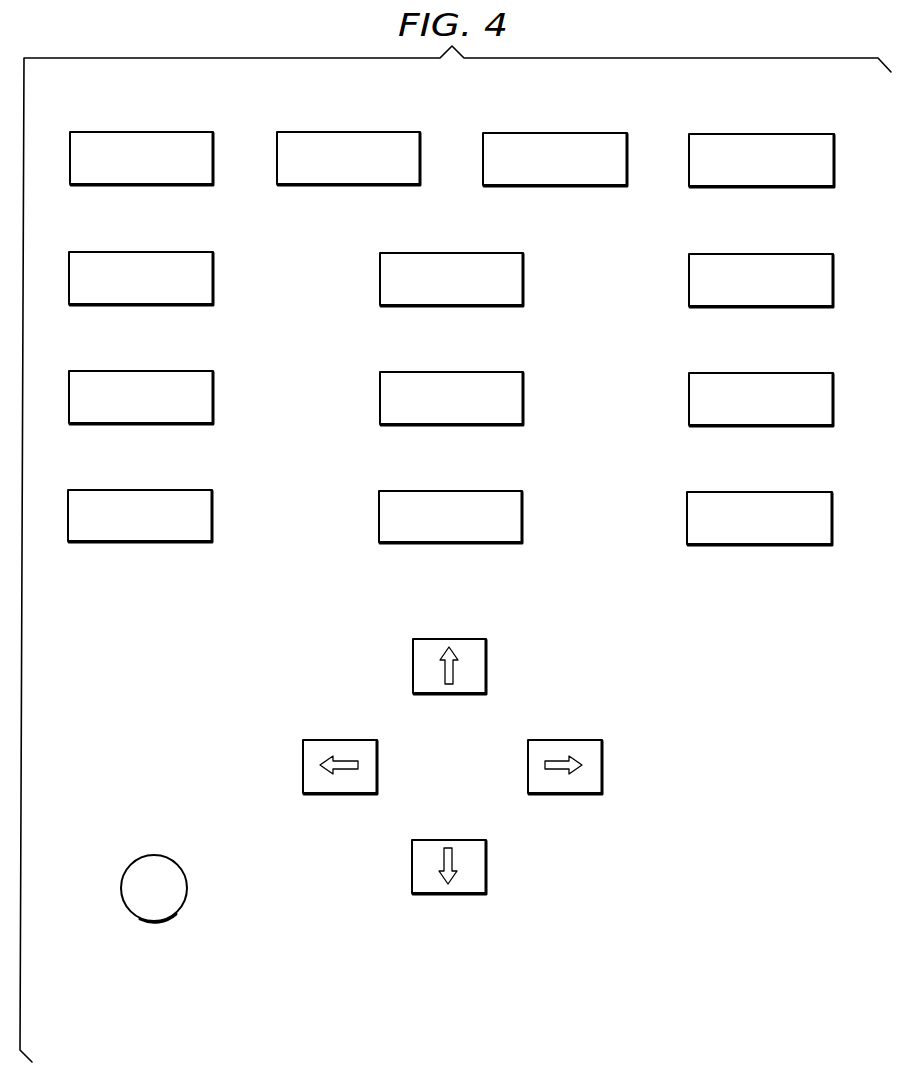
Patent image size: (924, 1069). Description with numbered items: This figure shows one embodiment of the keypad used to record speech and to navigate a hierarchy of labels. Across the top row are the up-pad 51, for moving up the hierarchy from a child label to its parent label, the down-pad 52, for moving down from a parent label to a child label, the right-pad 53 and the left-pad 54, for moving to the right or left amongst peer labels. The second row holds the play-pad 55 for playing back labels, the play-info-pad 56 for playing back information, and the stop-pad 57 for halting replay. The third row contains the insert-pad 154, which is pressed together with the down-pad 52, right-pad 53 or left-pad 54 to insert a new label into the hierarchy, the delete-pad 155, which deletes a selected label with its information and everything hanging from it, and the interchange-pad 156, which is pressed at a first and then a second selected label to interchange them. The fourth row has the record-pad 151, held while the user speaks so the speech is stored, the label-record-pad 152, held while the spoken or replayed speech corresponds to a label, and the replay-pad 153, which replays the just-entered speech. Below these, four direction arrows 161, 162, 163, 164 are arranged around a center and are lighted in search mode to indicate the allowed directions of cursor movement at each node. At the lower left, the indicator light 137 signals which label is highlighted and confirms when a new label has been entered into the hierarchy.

The up-pad 51 is at (145, 132).
The down-pad 52 is at (351, 132).
The right-pad 53 is at (558, 133).
The left-pad 54 is at (765, 134).
The play-pad 55 is at (145, 252).
The play-info-pad 56 is at (456, 253).
The stop-pad 57 is at (766, 254).
The insert-pad 154 is at (145, 371).
The delete-pad 155 is at (456, 372).
The interchange-pad 156 is at (766, 373).
The record-pad 151 is at (144, 490).
The label-record-pad 152 is at (456, 491).
The replay-pad 153 is at (764, 492).
The direction arrow 161 is at (337, 740).
The direction arrow 162 is at (451, 639).
The direction arrow 163 is at (565, 740).
The direction arrow 164 is at (446, 893).
The indicator light 137 is at (175, 915).